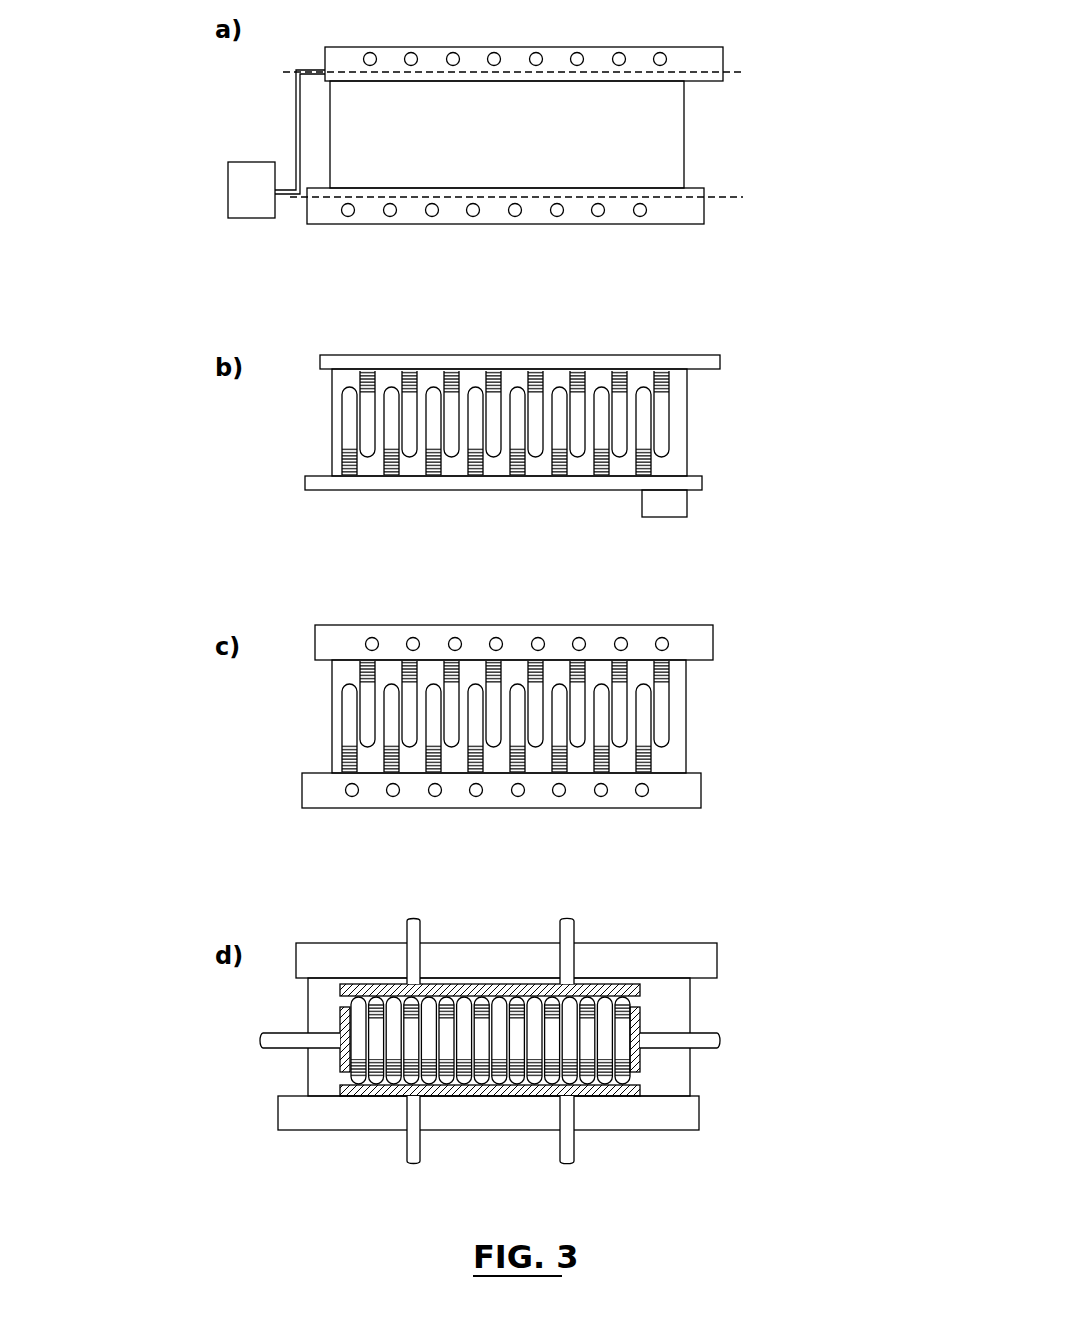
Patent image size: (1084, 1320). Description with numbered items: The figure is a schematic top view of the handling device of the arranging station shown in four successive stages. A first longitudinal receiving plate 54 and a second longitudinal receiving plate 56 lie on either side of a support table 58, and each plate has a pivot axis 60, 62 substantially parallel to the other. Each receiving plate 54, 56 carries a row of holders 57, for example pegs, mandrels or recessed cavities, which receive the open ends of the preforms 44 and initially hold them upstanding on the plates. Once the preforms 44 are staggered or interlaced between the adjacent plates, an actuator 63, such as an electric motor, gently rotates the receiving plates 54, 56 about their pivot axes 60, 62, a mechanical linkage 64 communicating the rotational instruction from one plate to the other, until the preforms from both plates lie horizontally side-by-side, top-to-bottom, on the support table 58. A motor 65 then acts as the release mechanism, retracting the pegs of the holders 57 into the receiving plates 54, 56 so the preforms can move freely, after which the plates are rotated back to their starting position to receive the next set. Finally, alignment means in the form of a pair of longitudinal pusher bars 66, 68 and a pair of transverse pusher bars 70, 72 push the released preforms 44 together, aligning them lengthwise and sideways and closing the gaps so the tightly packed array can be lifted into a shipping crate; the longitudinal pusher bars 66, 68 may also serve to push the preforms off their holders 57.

The preforms 44 is at (350, 427).
The first longitudinal receiving plate 54 is at (710, 360).
The second longitudinal receiving plate 56 is at (687, 212).
The holders 57 is at (410, 56).
The support table 58 is at (668, 123).
The pivot axis 60 is at (743, 72).
The pivot axis 62 is at (733, 197).
The actuator 63 is at (228, 163).
The mechanical linkage 64 is at (297, 103).
The motor 65 is at (640, 503).
The pusher bar 66 is at (480, 985).
The pusher bar 68 is at (480, 1097).
The pusher bar 70 is at (340, 1018).
The pusher bar 72 is at (640, 1013).